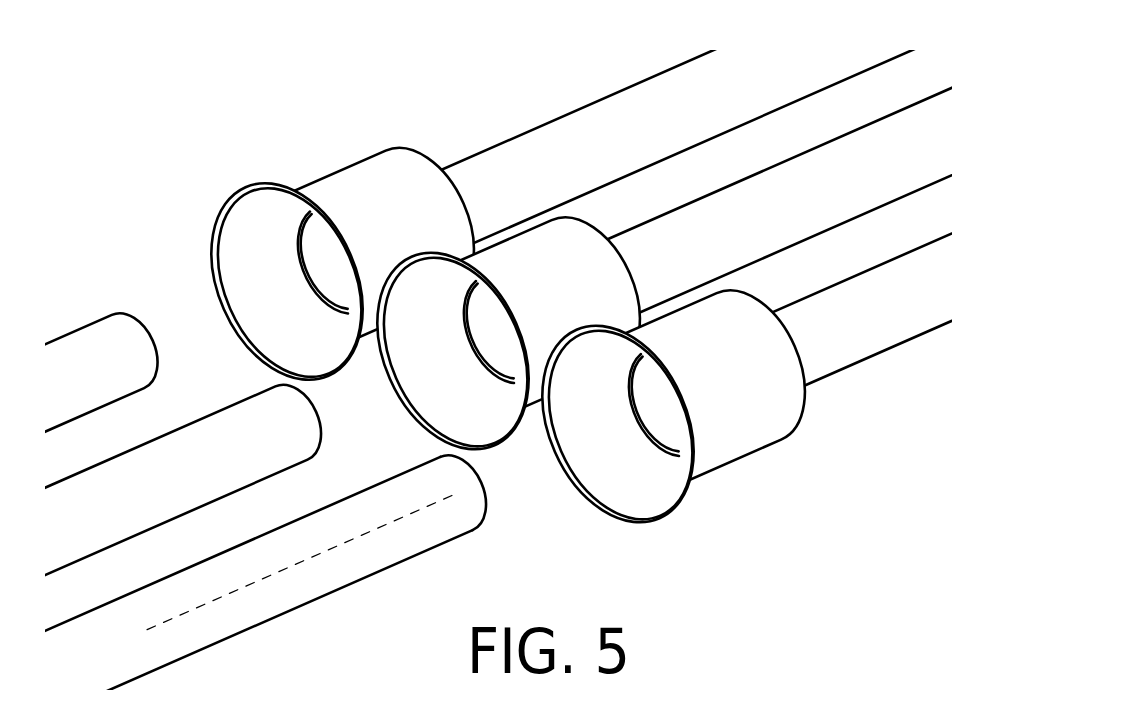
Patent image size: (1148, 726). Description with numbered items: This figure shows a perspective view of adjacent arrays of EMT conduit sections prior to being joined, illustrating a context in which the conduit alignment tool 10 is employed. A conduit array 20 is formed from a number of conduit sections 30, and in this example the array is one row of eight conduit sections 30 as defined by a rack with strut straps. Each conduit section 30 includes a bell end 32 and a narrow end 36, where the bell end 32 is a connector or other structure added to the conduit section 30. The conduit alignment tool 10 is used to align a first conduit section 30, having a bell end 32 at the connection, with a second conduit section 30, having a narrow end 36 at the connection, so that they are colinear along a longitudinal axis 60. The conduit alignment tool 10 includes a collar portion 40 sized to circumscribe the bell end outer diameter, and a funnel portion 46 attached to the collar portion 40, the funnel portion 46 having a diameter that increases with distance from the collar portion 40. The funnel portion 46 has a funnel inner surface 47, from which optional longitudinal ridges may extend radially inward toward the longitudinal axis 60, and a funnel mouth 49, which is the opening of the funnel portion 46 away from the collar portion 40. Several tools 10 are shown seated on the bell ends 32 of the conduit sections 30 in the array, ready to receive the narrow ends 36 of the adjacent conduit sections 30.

The conduit alignment tool 10 is at (661, 416).
The conduit array 20 is at (422, 125).
The conduit section 30 is at (555, 359).
The bell end 32 is at (772, 307).
The narrow end 36 is at (467, 539).
The collar portion 40 is at (758, 449).
The funnel portion 46 is at (693, 487).
The funnel inner surface 47 is at (625, 480).
The funnel mouth 49 is at (556, 485).
The longitudinal axis 60 is at (233, 593).